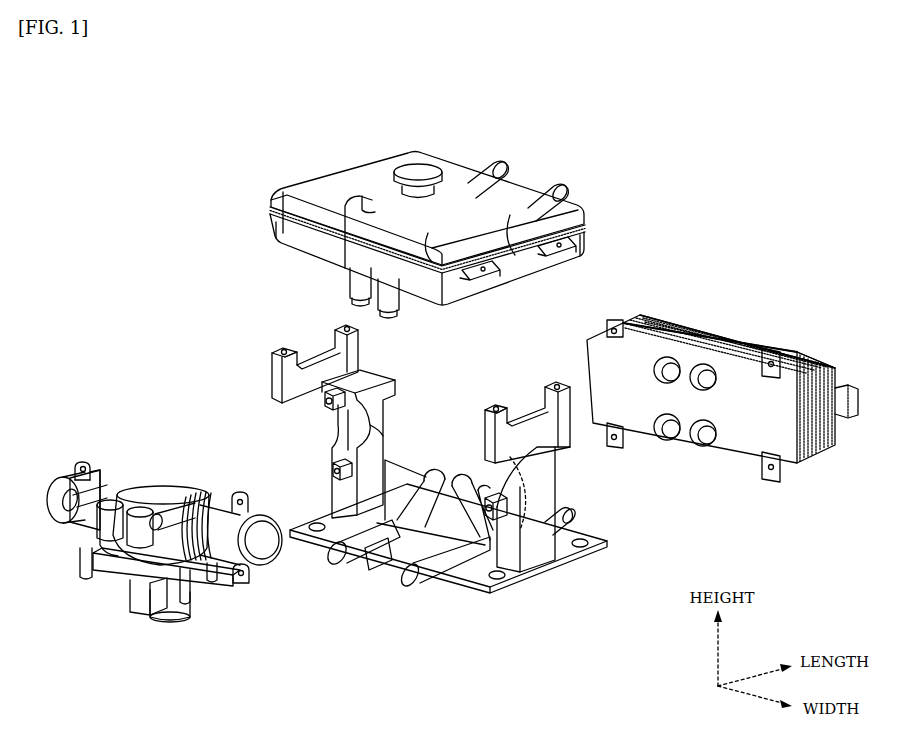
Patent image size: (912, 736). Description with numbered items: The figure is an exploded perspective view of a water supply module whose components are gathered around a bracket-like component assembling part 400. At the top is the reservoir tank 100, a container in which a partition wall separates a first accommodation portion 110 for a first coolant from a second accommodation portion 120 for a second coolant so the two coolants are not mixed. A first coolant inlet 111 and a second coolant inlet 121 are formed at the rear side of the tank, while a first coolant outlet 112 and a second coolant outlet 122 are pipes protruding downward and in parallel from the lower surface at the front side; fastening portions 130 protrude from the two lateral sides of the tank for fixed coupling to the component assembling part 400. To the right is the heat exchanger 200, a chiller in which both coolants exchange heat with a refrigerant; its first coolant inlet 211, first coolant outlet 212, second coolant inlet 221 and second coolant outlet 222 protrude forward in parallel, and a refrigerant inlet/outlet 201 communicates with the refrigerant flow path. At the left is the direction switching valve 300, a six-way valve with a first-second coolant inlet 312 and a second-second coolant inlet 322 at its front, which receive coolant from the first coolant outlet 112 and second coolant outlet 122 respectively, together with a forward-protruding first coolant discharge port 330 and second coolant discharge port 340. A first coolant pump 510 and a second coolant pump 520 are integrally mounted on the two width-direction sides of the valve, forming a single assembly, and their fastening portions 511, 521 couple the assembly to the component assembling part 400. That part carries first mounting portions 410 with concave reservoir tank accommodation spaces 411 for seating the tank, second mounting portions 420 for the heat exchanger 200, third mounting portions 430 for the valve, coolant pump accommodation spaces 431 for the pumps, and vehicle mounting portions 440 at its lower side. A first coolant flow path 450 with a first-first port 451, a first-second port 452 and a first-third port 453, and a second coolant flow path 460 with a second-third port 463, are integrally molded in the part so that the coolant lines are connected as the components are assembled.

The reservoir tank 100 is at (462, 207).
The first accommodation portion 110 is at (458, 200).
The first coolant inlet 111 is at (548, 182).
The first coolant outlet 112 is at (400, 303).
The second accommodation portion 120 is at (372, 170).
The second coolant inlet 121 is at (450, 180).
The second coolant outlet 122 is at (348, 282).
The fastening portions 130 is at (540, 228).
The heat exchanger 200 is at (733, 397).
The refrigerant inlet/outlet 201 is at (845, 385).
The first coolant inlet 211 is at (692, 440).
The first coolant outlet 212 is at (710, 343).
The second coolant inlet 221 is at (657, 440).
The second coolant outlet 222 is at (670, 333).
The direction switching valve 300 is at (156, 513).
The first-second coolant inlet 312 is at (168, 622).
The second-second coolant inlet 322 is at (108, 540).
The first coolant discharge port 330 is at (185, 495).
The second coolant discharge port 340 is at (68, 488).
The component assembling part 400 is at (489, 520).
The first mounting portions 410 is at (378, 473).
The reservoir tank accommodation spaces 411 is at (340, 353).
The second mounting portions 420 is at (390, 383).
The third mounting portions 430 is at (328, 403).
The coolant pump accommodation spaces 431 is at (338, 455).
The vehicle mounting portions 440 is at (578, 555).
The first coolant flow path 450 is at (558, 494).
The first-first port 451 is at (496, 405).
The first-second port 452 is at (578, 512).
The first-third port 453 is at (410, 590).
The second coolant flow path 460 is at (445, 462).
The second-third port 463 is at (330, 565).
The first coolant pump 510 is at (258, 555).
The fastening portions 511 is at (235, 492).
The second coolant pump 520 is at (58, 525).
The fastening portions 521 is at (83, 462).